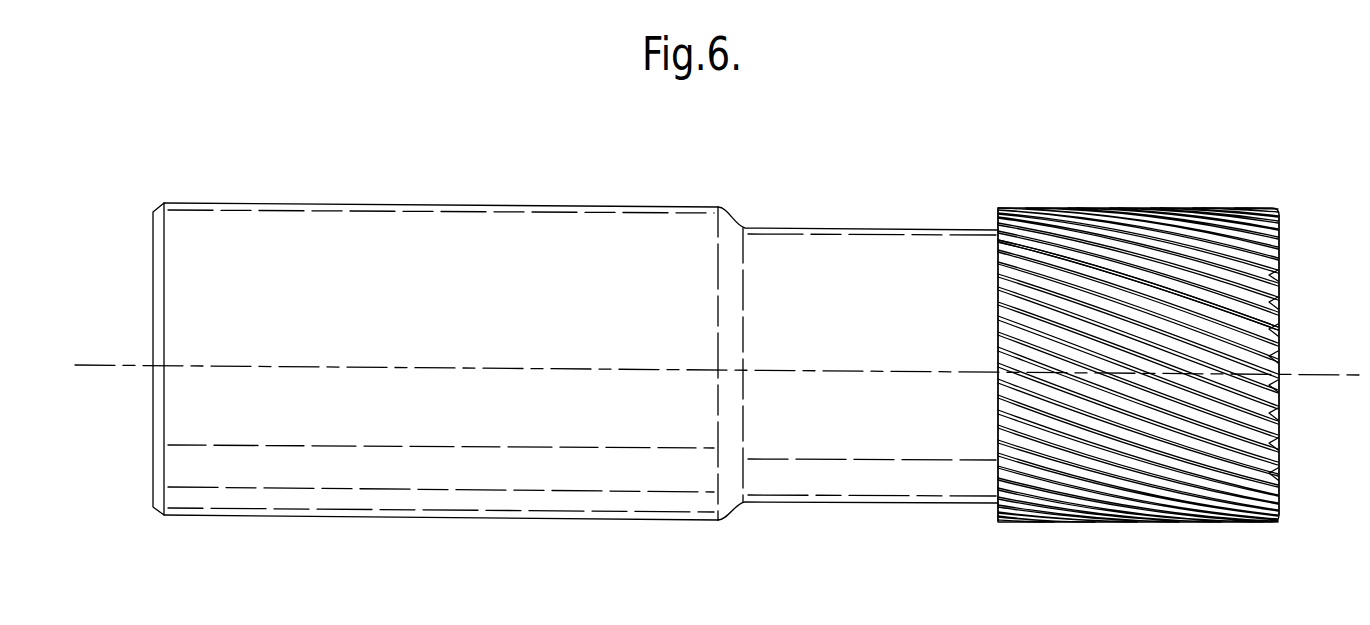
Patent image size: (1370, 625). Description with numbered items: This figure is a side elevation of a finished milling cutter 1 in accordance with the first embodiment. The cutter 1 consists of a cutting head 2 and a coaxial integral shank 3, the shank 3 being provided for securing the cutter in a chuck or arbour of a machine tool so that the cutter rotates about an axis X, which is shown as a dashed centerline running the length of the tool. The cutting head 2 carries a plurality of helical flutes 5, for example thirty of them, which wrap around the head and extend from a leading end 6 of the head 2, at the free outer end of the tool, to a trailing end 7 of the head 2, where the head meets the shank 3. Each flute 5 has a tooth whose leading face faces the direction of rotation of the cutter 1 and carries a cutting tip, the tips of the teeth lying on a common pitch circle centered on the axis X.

The milling cutter 1 is at (777, 208).
The cutting head 2 is at (1112, 243).
The shank 3 is at (443, 247).
The helical flutes 5 is at (1192, 247).
The leading end 6 is at (1280, 233).
The trailing end 7 is at (996, 255).
The axis X is at (111, 369).